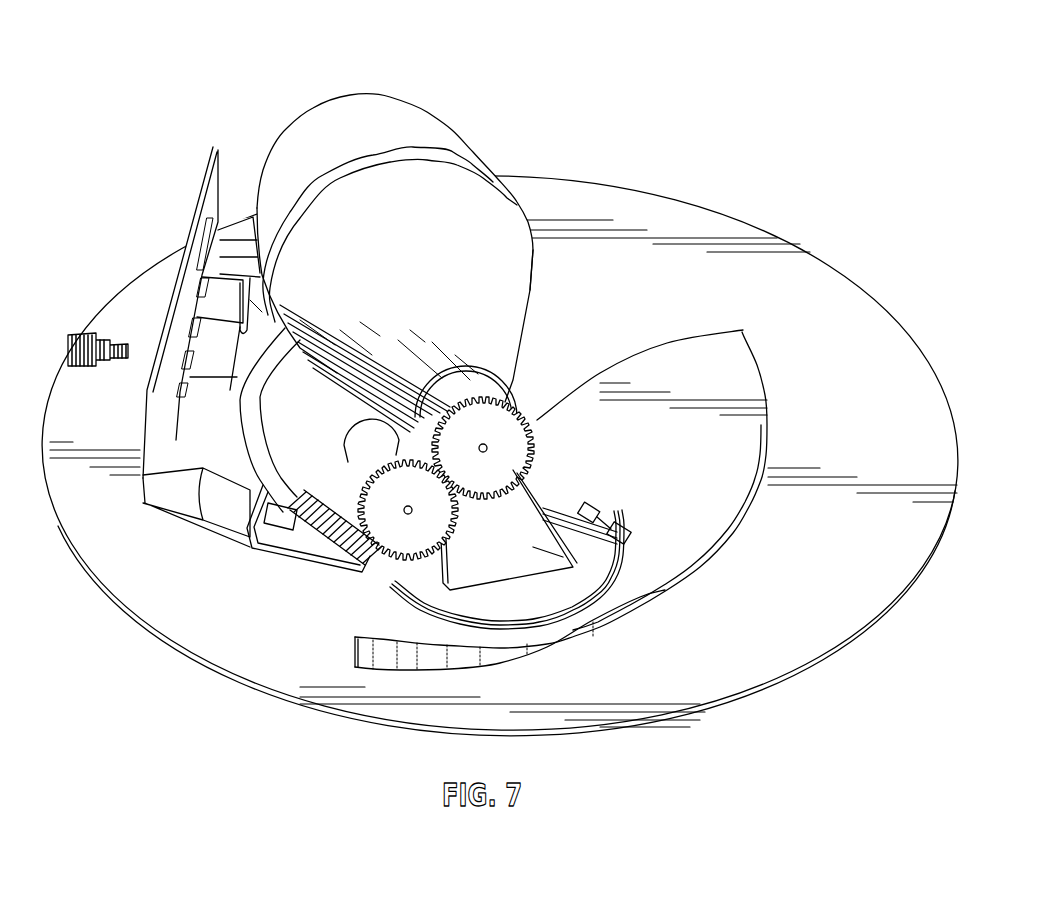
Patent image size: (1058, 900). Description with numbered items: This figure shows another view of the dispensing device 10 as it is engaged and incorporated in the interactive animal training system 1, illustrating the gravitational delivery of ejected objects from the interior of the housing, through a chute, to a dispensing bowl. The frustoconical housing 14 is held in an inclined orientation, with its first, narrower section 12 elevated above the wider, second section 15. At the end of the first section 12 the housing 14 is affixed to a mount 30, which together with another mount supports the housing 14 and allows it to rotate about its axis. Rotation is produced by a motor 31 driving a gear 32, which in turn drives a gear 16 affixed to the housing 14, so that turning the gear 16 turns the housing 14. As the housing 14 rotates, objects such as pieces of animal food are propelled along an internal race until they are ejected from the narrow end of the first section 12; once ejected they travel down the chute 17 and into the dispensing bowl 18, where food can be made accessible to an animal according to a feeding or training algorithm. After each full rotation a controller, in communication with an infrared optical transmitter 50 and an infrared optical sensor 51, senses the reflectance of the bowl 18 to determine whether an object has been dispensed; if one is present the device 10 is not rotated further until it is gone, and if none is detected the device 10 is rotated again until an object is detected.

The interactive animal training system 1 is at (752, 51).
The dispensing device 10 is at (420, 262).
The first section 12 is at (513, 217).
The frustoconical housing 14 is at (518, 272).
The second section 15 is at (427, 120).
The gear 16 is at (537, 427).
The chute 17 is at (415, 617).
The dispensing bowl 18 is at (618, 590).
The mount 30 is at (540, 500).
The motor 31 is at (368, 433).
The gear 32 is at (443, 517).
The infrared optical transmitter 50 is at (617, 523).
The infrared optical sensor 51 is at (390, 568).